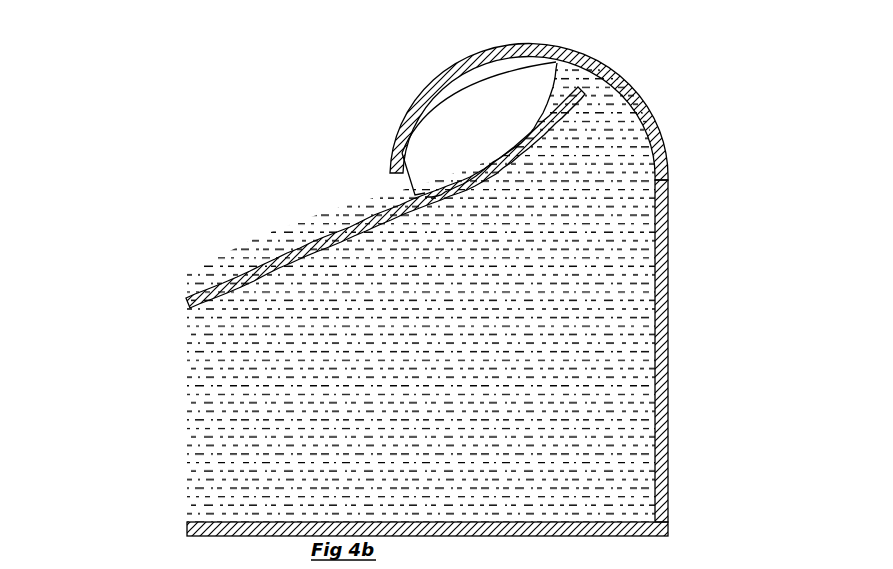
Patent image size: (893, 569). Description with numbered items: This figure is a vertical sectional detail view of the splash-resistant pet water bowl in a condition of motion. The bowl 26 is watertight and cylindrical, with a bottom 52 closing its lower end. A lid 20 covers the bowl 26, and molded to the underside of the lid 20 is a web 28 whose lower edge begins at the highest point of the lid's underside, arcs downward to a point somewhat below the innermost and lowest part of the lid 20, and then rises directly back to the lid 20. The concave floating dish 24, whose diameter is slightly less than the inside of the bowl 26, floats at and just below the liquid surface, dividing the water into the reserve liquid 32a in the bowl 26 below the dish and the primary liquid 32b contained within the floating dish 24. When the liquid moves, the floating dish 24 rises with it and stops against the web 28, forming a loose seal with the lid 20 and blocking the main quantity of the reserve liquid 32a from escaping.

The lid 20 is at (600, 68).
The floating dish 24 is at (216, 281).
The bowl 26 is at (628, 413).
The web 28 is at (407, 117).
The reserve liquid 32a is at (548, 300).
The primary liquid 32b is at (258, 248).
The bottom 52 is at (190, 528).